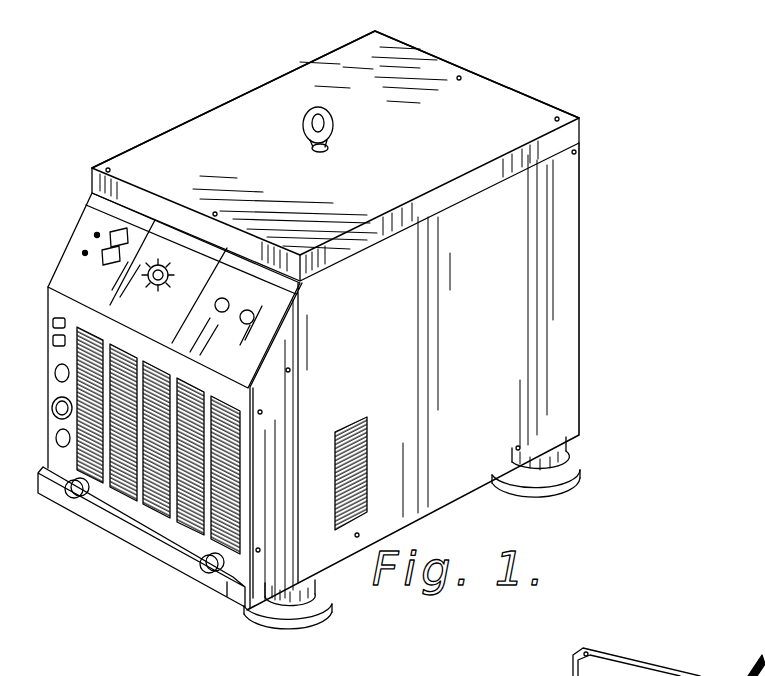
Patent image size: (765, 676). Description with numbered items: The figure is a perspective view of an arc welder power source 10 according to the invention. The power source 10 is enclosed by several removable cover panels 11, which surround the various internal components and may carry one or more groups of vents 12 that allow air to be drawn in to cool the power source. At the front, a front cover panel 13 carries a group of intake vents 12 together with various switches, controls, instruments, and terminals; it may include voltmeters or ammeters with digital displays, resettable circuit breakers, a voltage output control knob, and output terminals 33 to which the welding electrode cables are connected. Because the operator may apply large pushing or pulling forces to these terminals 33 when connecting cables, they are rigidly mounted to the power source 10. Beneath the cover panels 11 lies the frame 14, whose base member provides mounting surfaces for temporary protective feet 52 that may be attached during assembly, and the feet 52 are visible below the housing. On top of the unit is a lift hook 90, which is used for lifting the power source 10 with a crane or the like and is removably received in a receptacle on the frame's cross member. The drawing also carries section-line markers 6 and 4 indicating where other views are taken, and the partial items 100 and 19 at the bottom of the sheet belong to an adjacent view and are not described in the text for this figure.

The arc welder power source 10 is at (578, 54).
The cover panels 11 is at (484, 92).
The lift hook 90 is at (308, 110).
The section line 6- 6 is at (282, 170).
The section line 4- 4 is at (612, 275).
The vents 12 is at (192, 404).
The front cover panel 13 is at (202, 528).
The frame 14 is at (233, 600).
The output terminals 33 is at (73, 492).
The protective feet 52 is at (308, 618).
The adjacent figure element (partial) 100 is at (492, 657).
The adjacent figure element (partial) 19 is at (657, 675).